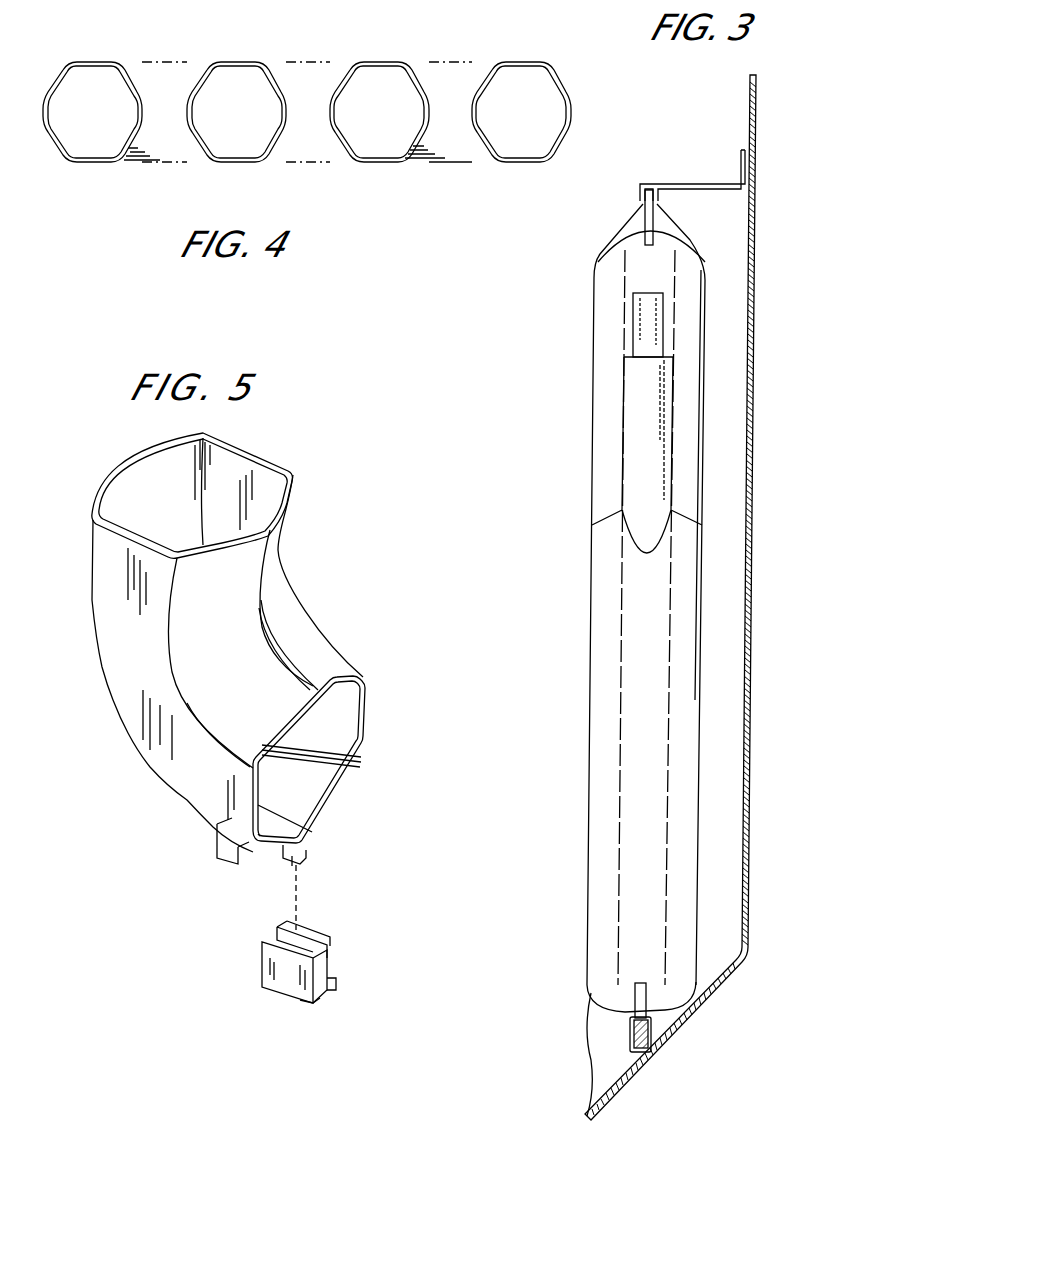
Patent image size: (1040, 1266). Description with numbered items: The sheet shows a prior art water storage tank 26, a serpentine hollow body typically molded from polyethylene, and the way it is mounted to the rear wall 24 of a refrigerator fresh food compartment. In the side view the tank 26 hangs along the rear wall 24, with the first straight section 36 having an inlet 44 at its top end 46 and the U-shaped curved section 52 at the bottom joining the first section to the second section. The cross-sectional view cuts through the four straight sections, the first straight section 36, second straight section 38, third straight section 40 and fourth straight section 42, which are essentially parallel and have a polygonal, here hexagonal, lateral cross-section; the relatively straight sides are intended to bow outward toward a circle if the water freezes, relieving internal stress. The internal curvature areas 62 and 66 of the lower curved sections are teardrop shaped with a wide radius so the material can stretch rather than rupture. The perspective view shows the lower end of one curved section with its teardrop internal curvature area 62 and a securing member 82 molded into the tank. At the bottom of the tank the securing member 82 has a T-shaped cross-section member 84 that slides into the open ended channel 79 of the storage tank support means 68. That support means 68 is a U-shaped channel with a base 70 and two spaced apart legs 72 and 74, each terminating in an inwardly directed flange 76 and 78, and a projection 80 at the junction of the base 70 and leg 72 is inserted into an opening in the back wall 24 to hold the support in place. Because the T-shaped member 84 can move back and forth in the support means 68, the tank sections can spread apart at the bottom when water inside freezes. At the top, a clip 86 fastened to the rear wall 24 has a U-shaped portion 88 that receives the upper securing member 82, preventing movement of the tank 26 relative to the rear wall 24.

In FIG. 3, the rear wall 24 is at (703, 1012).
In FIG. 4, the water storage tank 26 is at (176, 57).
In FIG. 3, the water storage tank 26 is at (584, 566).
In FIG. 4, the first straight section 36 is at (520, 63).
In FIG. 3, the first straight section 36 is at (602, 660).
In FIG. 4, the second straight section 38 is at (368, 63).
In FIG. 4, the third straight section 40 is at (236, 63).
In FIG. 4, the fourth straight section 42 is at (92, 63).
In FIG. 3, the inlet 44 is at (647, 325).
In FIG. 3, the top end 46 is at (637, 408).
In FIG. 3, the U-shaped curved section 52 is at (633, 963).
In FIG. 4, the internal curvature area 62 is at (466, 162).
In FIG. 5, the internal curvature area 62 is at (310, 640).
In FIG. 4, the internal curvature area 66 is at (172, 165).
In FIG. 3, the storage tank support means 68 is at (652, 1030).
In FIG. 5, the storage tank support means 68 is at (258, 934).
In FIG. 5, the base 70 is at (322, 996).
In FIG. 5, the leg 72 is at (325, 952).
In FIG. 5, the leg 74 is at (265, 958).
In FIG. 5, the inwardly directed flange 76 is at (300, 940).
In FIG. 5, the inwardly directed flange 78 is at (318, 970).
In FIG. 5, the open ended channel 79 is at (318, 1005).
In FIG. 3, the projection 80 is at (650, 1035).
In FIG. 5, the projection 80 is at (336, 986).
In FIG. 3, the securing member 82 is at (640, 222).
In FIG. 5, the securing member 82 is at (225, 855).
In FIG. 5, the T-shaped cross-section member 84 is at (307, 860).
In FIG. 3, the clip 86 is at (690, 186).
In FIG. 3, the U-shaped portion 88 is at (638, 197).